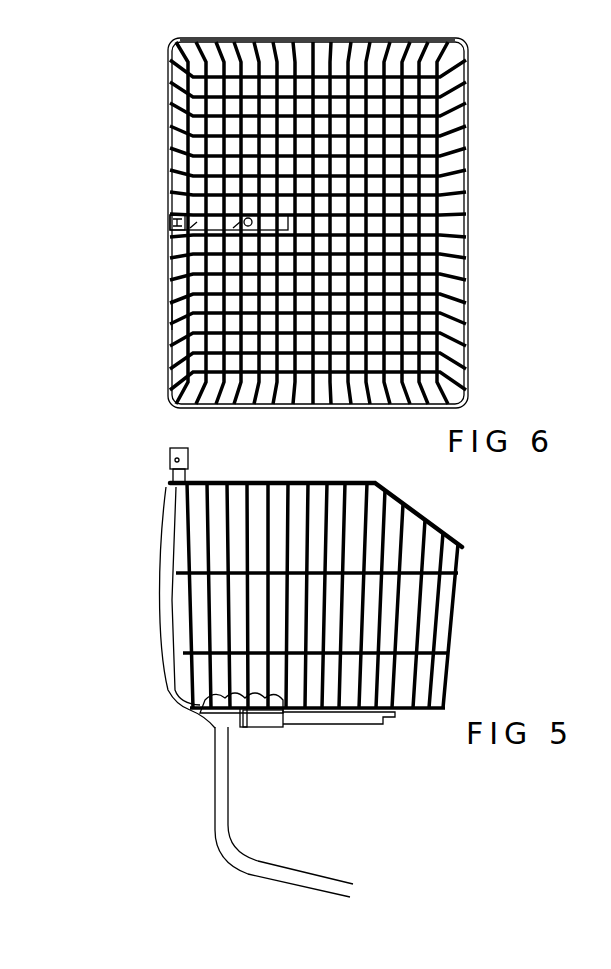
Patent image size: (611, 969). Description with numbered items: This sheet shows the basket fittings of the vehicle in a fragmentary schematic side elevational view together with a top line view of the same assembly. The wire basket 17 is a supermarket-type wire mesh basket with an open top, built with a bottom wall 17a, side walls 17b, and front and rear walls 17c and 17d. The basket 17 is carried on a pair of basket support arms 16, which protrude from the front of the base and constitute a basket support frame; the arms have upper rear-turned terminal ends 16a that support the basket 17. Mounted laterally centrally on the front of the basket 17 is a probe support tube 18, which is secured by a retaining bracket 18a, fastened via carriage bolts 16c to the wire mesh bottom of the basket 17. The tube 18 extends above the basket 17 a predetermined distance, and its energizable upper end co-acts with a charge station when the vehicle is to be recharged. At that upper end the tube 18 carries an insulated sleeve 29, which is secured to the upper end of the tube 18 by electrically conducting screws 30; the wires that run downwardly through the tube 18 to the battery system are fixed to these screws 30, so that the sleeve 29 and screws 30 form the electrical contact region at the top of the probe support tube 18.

In FIG. 5, the basket support arms 16 is at (252, 860).
In FIG. 5, the upper rear-turned terminal ends 16a is at (395, 730).
In FIG. 5, the carriage bolts 16c is at (260, 722).
In FIG. 6, the wire basket 17 is at (479, 249).
In FIG. 5, the wire basket 17 is at (316, 463).
In FIG. 6, the bottom wall 17a is at (350, 168).
In FIG. 5, the bottom wall 17a is at (172, 593).
In FIG. 6, the side walls 17b is at (313, 55).
In FIG. 5, the side walls 17b is at (420, 603).
In FIG. 6, the front wall 17c is at (185, 300).
In FIG. 5, the rear wall 17d is at (450, 636).
In FIG. 6, the probe support tube 18 is at (193, 236).
In FIG. 5, the probe support tube 18 is at (172, 637).
In FIG. 6, the retaining bracket 18a is at (232, 232).
In FIG. 5, the retaining bracket 18a is at (188, 697).
In FIG. 6, the insulated sleeve 29 is at (170, 216).
In FIG. 5, the insulated sleeve 29 is at (190, 466).
In FIG. 5, the electrically conducting screws 30 is at (178, 448).